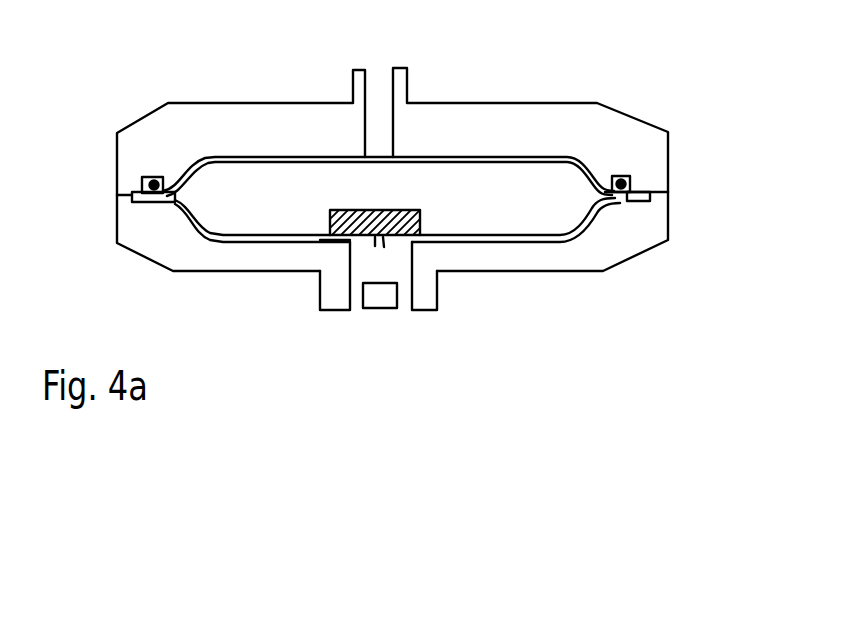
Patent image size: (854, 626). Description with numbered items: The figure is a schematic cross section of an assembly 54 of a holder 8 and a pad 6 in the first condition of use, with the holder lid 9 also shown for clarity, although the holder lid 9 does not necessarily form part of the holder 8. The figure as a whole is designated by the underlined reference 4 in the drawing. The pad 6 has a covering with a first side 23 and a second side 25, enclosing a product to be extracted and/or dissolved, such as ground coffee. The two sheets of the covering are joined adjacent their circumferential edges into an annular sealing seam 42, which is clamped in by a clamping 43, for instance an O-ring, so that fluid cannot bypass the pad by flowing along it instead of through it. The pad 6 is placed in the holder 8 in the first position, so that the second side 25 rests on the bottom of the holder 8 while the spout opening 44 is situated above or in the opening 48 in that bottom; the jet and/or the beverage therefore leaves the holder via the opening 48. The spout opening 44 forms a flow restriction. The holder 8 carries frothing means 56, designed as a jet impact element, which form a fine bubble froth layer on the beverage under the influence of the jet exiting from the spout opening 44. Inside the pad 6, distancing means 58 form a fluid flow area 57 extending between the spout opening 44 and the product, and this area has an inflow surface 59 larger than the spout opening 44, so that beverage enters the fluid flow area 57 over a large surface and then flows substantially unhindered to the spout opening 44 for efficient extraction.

The sensor device 4 is at (748, 378).
The pad 6 is at (233, 170).
The holder 8 is at (137, 255).
The holder lid 9 is at (140, 120).
The first side 23 is at (485, 149).
The second side 25 is at (490, 246).
The sealing seam 42 is at (632, 196).
The clamping 43 is at (632, 183).
The spout opening 44 is at (382, 248).
The opening 48 is at (402, 326).
The assembly 54 is at (588, 292).
The frothing means 56 is at (362, 318).
The fluid flow area 57 is at (350, 243).
The distancing means 58 is at (327, 238).
The inflow surface 59 is at (348, 210).